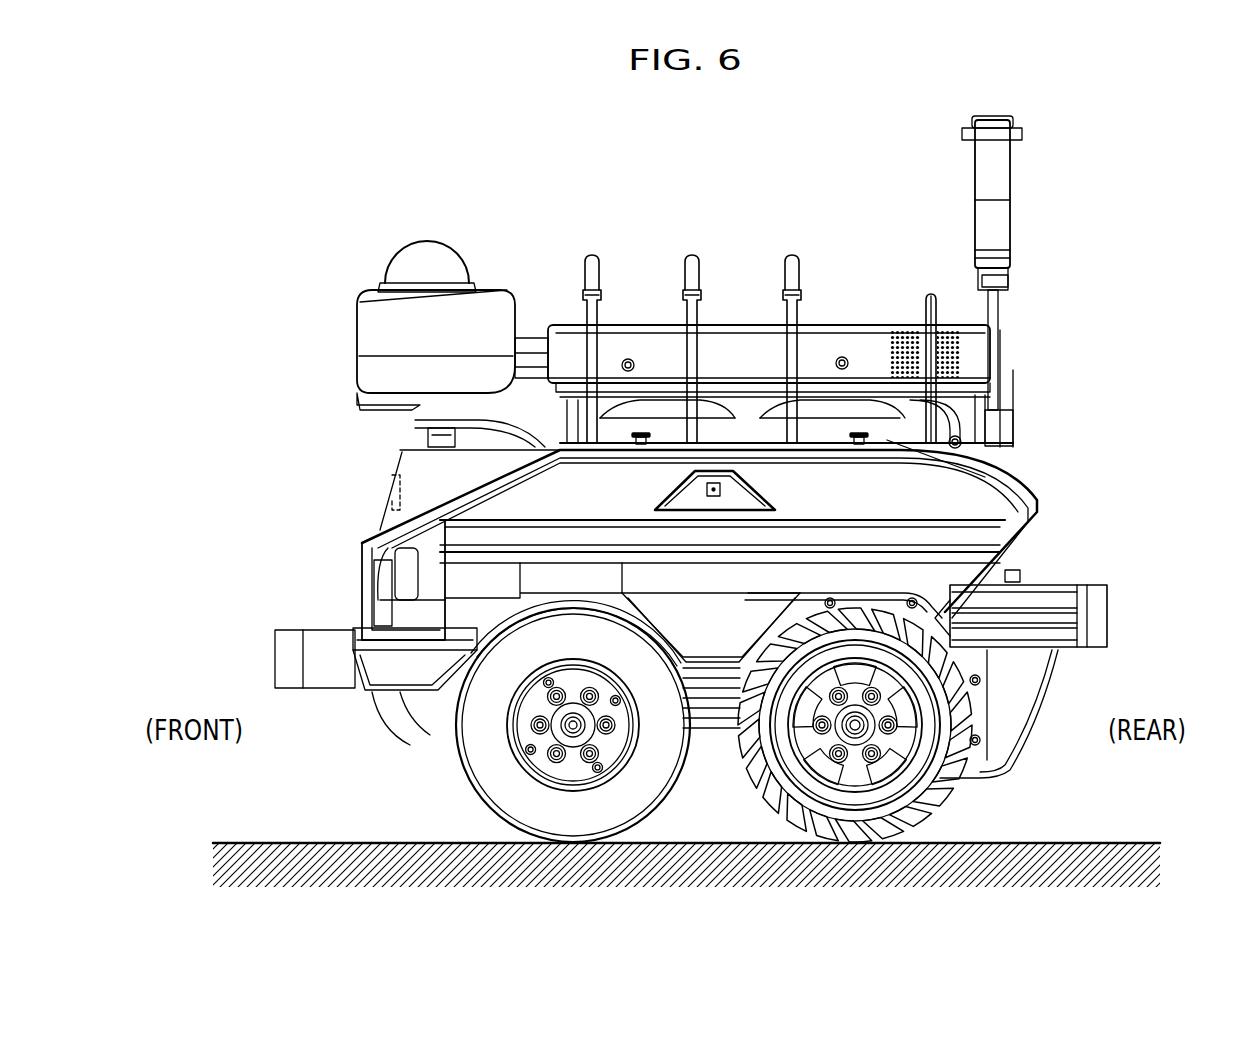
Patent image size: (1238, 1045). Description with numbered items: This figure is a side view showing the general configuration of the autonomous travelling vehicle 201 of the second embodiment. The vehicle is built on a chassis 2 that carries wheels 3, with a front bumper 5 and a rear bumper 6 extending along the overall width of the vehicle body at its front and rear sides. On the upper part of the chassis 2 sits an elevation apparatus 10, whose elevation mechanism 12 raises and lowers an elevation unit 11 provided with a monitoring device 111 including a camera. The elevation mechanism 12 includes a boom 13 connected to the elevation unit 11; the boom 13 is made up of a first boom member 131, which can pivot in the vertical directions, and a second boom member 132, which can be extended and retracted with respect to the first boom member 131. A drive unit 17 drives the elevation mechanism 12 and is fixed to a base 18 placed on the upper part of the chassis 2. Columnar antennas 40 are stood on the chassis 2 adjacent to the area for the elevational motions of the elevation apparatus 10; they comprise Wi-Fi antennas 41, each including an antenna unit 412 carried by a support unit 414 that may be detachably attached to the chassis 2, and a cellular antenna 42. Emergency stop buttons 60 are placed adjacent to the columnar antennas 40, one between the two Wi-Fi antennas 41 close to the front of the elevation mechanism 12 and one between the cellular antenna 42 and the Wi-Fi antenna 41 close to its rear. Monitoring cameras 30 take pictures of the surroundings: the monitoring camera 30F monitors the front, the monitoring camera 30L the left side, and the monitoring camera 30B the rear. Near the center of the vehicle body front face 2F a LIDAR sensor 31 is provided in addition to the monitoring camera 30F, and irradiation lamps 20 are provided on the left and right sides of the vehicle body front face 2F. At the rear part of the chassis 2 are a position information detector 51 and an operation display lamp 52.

The autonomous travelling vehicle 201 is at (318, 207).
The chassis 2 is at (1052, 548).
The vehicle body front face 2F is at (372, 518).
The wheels 3 is at (575, 828).
The bumper 5 is at (283, 660).
The bumper 6 is at (1105, 620).
The elevation apparatus 10 is at (1012, 368).
The elevation unit 11 is at (365, 345).
The monitoring device 111 is at (415, 250).
The elevation mechanism 12 is at (868, 320).
The boom 13 is at (734, 320).
The first boom member 131 is at (646, 348).
The second boom member 132 is at (535, 360).
The drive unit 17 is at (968, 428).
The base 18 is at (985, 477).
The irradiation lamps 20 is at (358, 582).
The monitoring cameras 30 is at (726, 529).
The monitoring camera 30F is at (393, 470).
The monitoring camera 30L is at (713, 498).
The monitoring camera 30B is at (1040, 500).
The LIDAR sensor 31 is at (393, 492).
The columnar antennas 40 is at (750, 267).
The Wi-Fi antennas 41 is at (592, 250).
The cellular antenna 42 is at (931, 296).
The antenna unit 412 is at (795, 290).
The support unit 414 is at (797, 345).
The position information detector 51 is at (1022, 132).
The operation display lamp 52 is at (1002, 222).
The emergency stop buttons 60 is at (643, 445).